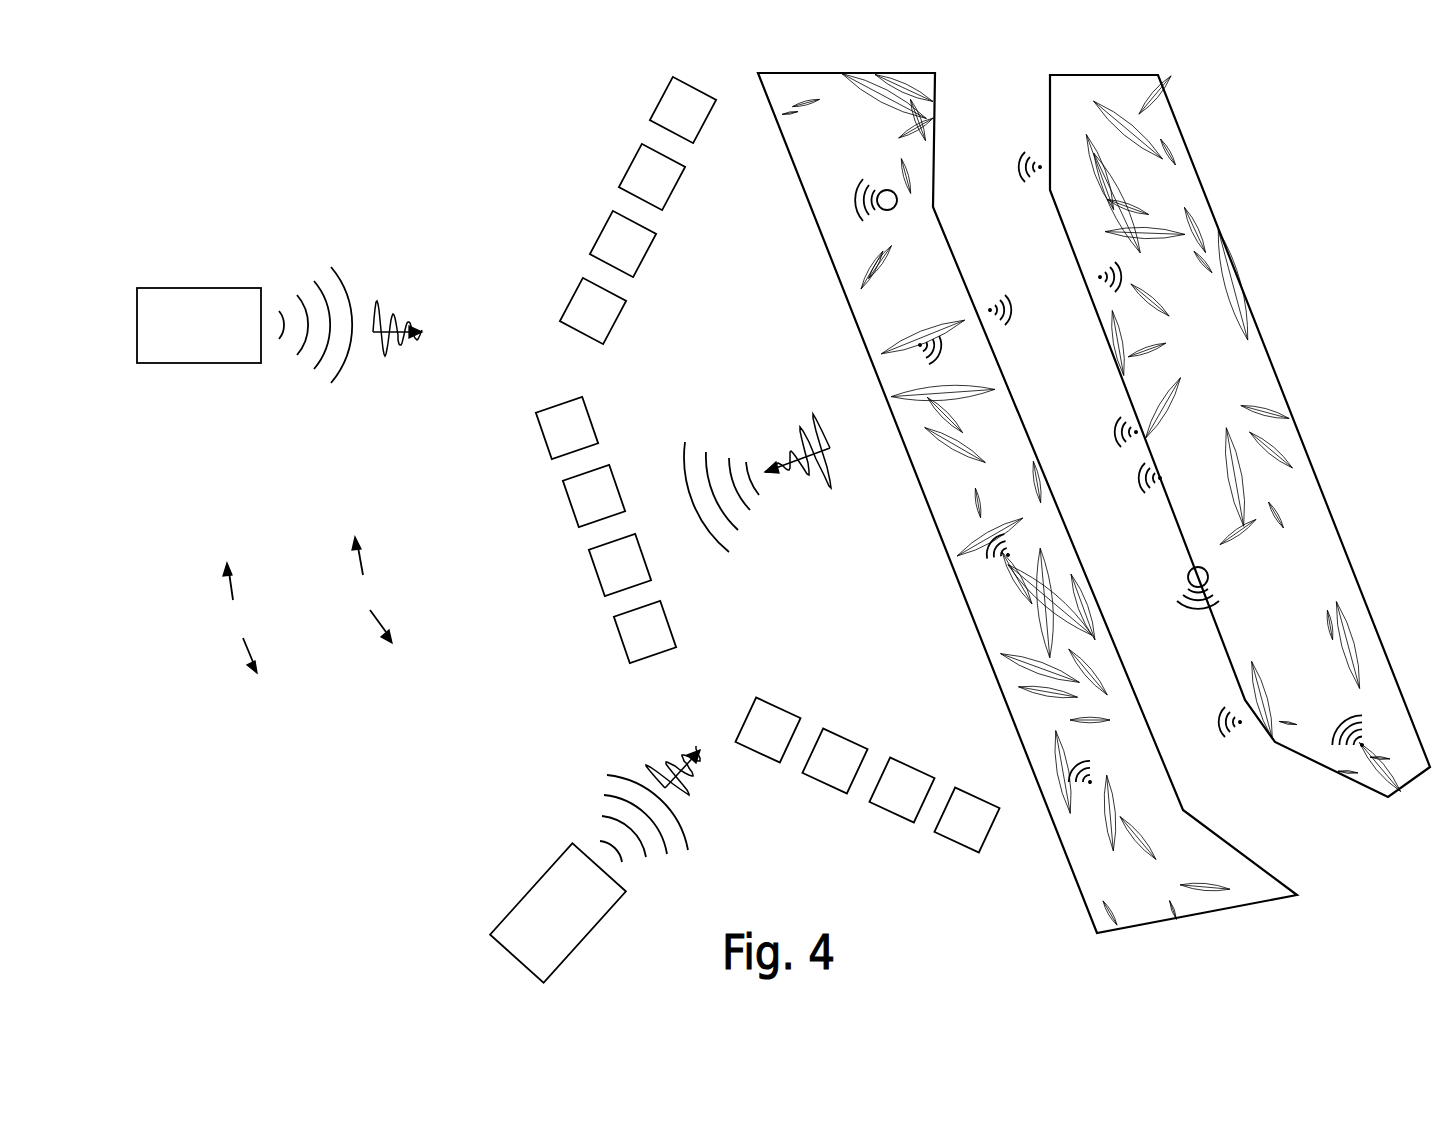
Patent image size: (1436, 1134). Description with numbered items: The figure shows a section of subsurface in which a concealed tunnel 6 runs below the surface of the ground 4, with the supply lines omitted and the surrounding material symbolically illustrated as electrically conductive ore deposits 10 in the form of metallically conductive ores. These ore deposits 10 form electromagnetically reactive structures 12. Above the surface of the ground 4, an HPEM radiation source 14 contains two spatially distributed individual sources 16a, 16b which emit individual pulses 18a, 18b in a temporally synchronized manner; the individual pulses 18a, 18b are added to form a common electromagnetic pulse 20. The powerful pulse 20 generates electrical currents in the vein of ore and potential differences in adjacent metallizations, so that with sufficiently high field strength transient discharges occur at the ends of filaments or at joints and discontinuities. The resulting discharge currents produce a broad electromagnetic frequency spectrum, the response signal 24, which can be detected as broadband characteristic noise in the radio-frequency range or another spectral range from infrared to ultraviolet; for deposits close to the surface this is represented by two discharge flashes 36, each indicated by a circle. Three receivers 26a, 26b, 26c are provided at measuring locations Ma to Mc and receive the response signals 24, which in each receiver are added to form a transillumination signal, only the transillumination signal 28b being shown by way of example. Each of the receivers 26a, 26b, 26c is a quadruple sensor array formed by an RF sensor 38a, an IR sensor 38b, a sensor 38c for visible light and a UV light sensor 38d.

The surface of the ground 4 is at (1230, 262).
The tunnel 6 is at (1330, 835).
The ore deposits 10 is at (917, 140).
The electromagnetically reactive structures 12 is at (1268, 435).
The HPEM radiation source 14 is at (240, 618).
The individual source 16a is at (217, 336).
The individual source 16b is at (537, 930).
The individual pulse 18a is at (398, 313).
The individual pulse 18b is at (643, 760).
The electromagnetic pulse 20 is at (372, 590).
The response signal 24 is at (1023, 153).
The receiver 26a is at (586, 137).
The receiver 26b is at (524, 538).
The receiver 26c is at (915, 860).
The transillumination signal 28b is at (817, 488).
The discharge flashes 36 is at (880, 213).
The RF sensor 38a is at (542, 437).
The IR sensor 38b is at (568, 507).
The sensor for visible light 38c is at (593, 572).
The UV light sensor 38d is at (622, 637).